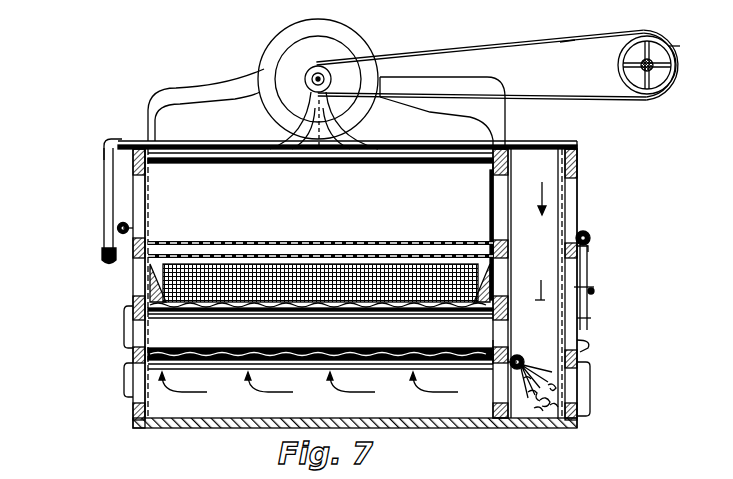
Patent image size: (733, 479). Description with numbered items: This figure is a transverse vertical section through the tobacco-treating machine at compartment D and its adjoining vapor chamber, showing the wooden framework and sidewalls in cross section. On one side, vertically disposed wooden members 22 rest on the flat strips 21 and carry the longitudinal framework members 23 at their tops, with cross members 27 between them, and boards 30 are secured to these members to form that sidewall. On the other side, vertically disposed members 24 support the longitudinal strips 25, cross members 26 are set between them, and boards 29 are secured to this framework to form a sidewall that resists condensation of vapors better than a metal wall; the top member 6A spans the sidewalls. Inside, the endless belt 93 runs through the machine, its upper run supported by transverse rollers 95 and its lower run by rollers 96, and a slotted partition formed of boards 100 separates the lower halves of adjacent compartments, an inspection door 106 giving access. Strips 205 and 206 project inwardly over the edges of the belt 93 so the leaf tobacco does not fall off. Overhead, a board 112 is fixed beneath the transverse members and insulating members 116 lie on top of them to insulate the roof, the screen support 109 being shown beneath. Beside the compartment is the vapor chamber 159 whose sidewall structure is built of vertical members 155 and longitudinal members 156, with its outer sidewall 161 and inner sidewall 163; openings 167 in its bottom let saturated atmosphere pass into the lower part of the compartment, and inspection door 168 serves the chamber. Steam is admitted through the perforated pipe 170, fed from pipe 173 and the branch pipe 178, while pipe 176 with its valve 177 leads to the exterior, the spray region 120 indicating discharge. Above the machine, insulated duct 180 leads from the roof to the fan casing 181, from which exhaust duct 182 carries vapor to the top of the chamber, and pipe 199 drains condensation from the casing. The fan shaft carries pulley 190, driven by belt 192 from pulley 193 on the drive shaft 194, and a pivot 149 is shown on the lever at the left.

The longitudinally disposed strips 21 is at (133, 412).
The vertically disposed wooden members 22 is at (147, 230).
The longitudinally disposed framework members 23 is at (148, 165).
The vertically disposed members 24 is at (490, 190).
The longitudinally disposed strips 25 is at (491, 172).
The cross members 26 is at (491, 348).
The cross members 27 is at (124, 334).
The boards 29 is at (491, 210).
The boards 30 is at (148, 208).
The top wall 6A is at (345, 156).
The endless belt 93 is at (263, 318).
The rollers 95 is at (287, 318).
The rollers 96 is at (303, 373).
The boards 100 is at (341, 371).
The inspection door 106 is at (124, 384).
The screen support 109 is at (216, 318).
The board 112 is at (388, 235).
The insulating members 116 is at (337, 243).
The spray 120 is at (534, 401).
The pivot 149 is at (108, 246).
The vertical members 155 is at (575, 214).
The longitudinal members 156 is at (565, 251).
The vapor chamber 159 is at (541, 300).
The outer sidewall 161 is at (541, 373).
The inner sidewalls 163 is at (510, 247).
The openings 167 is at (486, 398).
The inspection door 168 is at (586, 372).
The perforated pipe 170 is at (519, 357).
The pipe 173 is at (590, 240).
The pipe 176 is at (589, 318).
The valve 177 is at (594, 289).
The pipe 178 is at (588, 264).
The insulated duct 180 is at (387, 113).
The fan casing 181 is at (270, 50).
The exhaust duct 182 is at (497, 64).
The pulley 190 is at (334, 68).
The belts 192 is at (593, 40).
The pulleys 193 is at (616, 66).
The drive shaft 194 is at (672, 42).
The pipe 199 is at (106, 218).
The strips 205 is at (508, 282).
The strips 206 is at (150, 288).